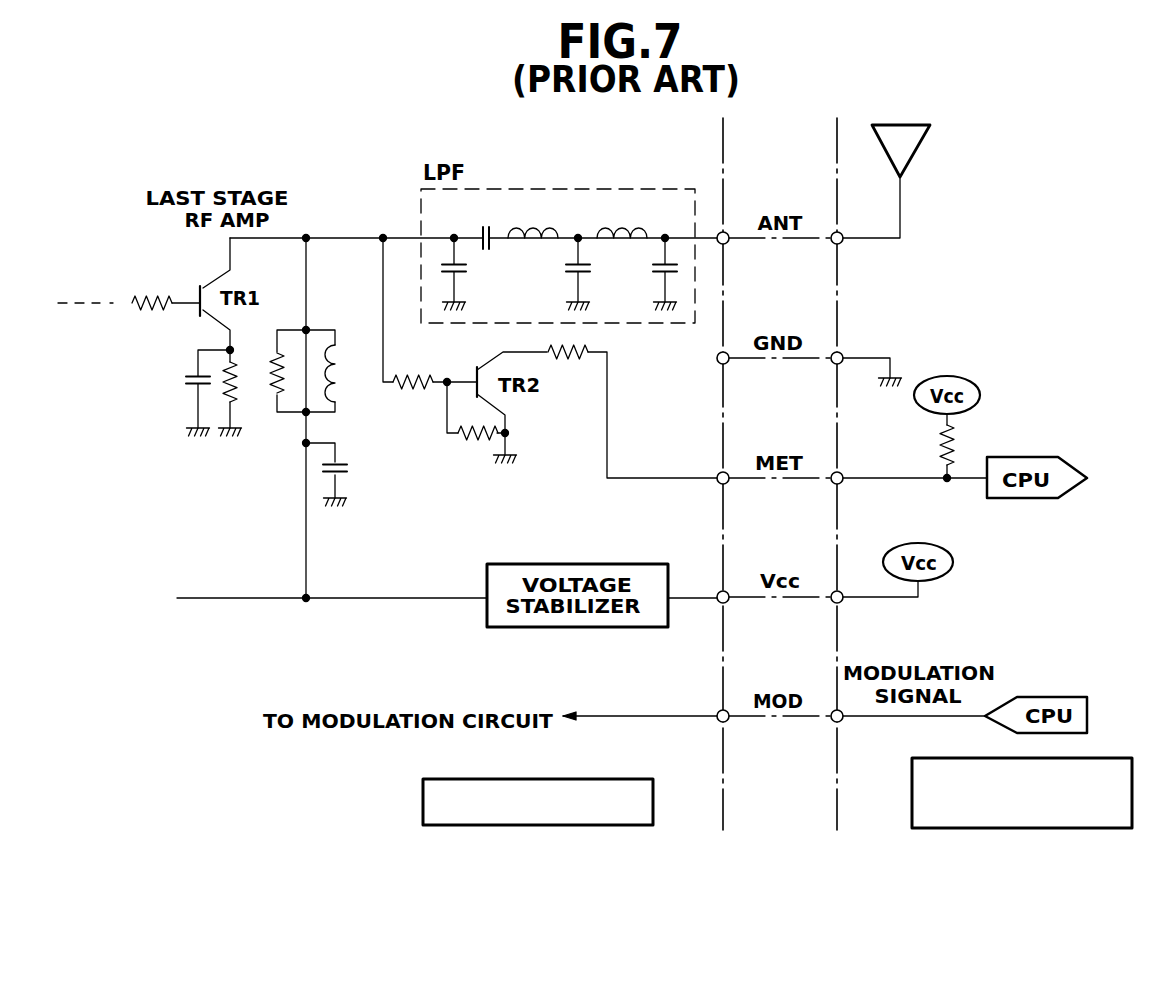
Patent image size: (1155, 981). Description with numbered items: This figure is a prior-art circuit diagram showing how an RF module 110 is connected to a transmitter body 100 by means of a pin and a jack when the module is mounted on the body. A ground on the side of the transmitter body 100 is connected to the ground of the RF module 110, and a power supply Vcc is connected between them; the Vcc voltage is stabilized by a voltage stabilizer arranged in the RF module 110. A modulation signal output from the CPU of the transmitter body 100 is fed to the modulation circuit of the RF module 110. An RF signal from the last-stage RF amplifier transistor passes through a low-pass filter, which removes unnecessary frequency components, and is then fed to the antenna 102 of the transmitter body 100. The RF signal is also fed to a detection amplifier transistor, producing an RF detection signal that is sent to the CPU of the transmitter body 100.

The transmitter body 100 is at (882, 760).
The antenna 102 is at (917, 147).
The RF module 110 is at (346, 753).